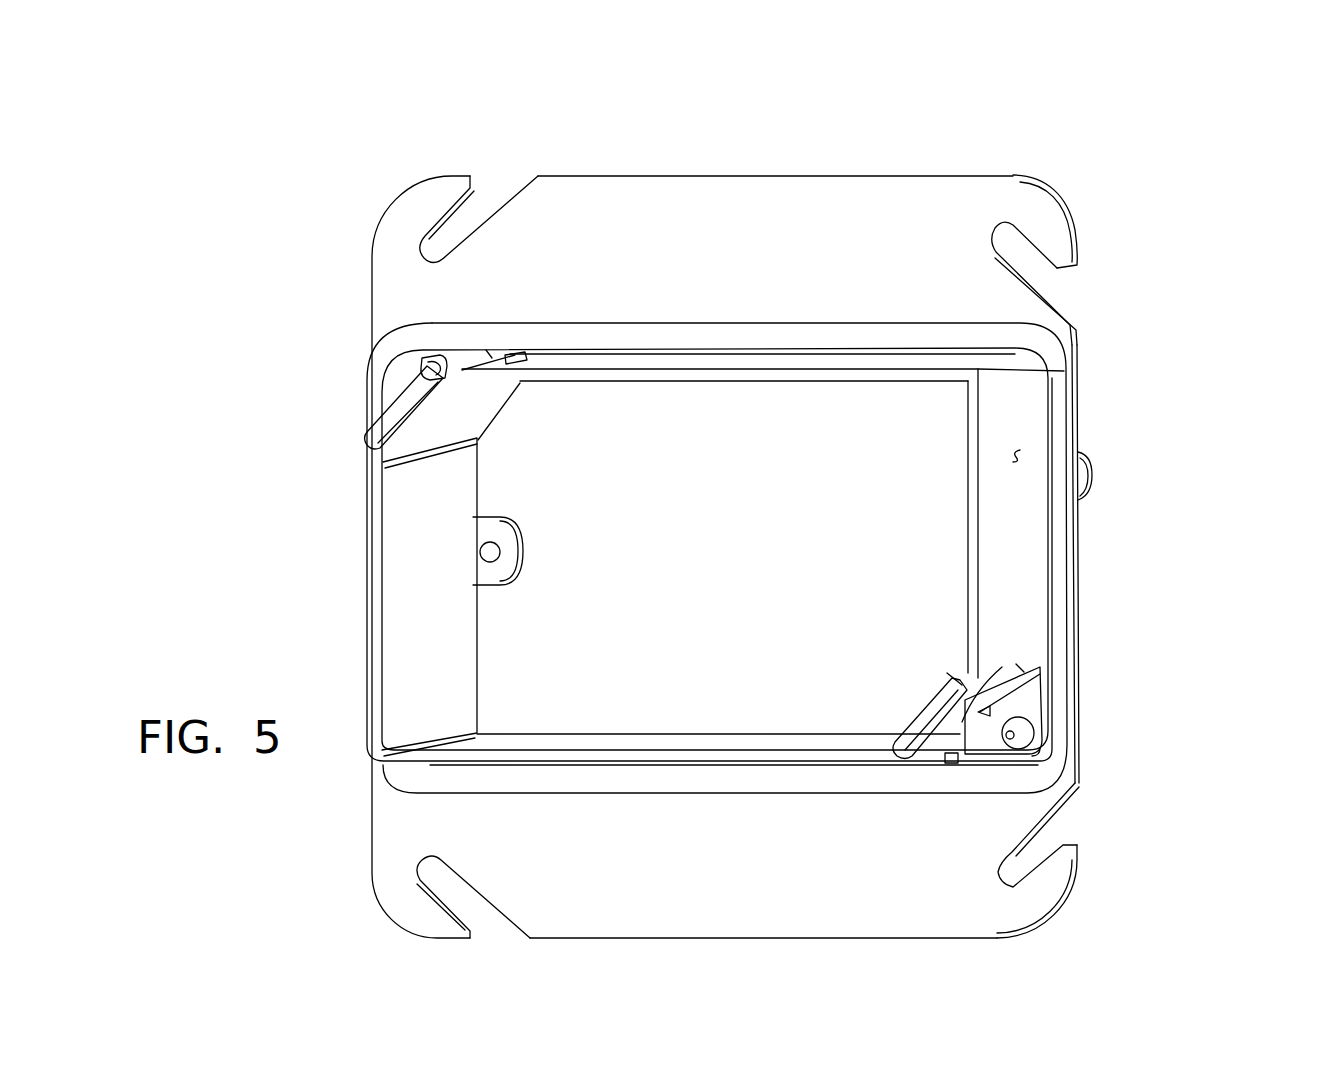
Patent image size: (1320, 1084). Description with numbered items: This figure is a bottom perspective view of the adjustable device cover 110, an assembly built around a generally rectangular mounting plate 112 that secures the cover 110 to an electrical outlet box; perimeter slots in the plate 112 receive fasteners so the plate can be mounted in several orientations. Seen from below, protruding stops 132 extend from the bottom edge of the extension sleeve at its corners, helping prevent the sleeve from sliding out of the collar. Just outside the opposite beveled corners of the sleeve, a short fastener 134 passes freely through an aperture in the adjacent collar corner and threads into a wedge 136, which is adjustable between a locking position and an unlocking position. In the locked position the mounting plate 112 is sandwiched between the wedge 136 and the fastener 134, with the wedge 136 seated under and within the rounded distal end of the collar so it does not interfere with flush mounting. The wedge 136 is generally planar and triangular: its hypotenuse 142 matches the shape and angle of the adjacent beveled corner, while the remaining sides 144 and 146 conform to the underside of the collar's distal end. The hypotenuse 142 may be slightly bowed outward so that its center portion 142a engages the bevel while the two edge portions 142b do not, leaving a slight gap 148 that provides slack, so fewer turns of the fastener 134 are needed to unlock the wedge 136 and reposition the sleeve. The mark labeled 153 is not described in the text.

The adjustable device cover 110 is at (962, 145).
The mounting plate 112 is at (724, 257).
The protruding stops 132 is at (363, 438).
The fastener 134 is at (427, 371).
The wedge 136 is at (425, 362).
The hypotenuse 142 is at (1030, 708).
The center portion of the hypotenuse 142a is at (1000, 711).
The edge portions of the hypotenuse 142b is at (493, 357).
The side of the wedge 144 is at (1047, 740).
The side of the wedge 146 is at (440, 353).
The gap 148 is at (507, 357).
The locating feature 153 is at (1022, 455).